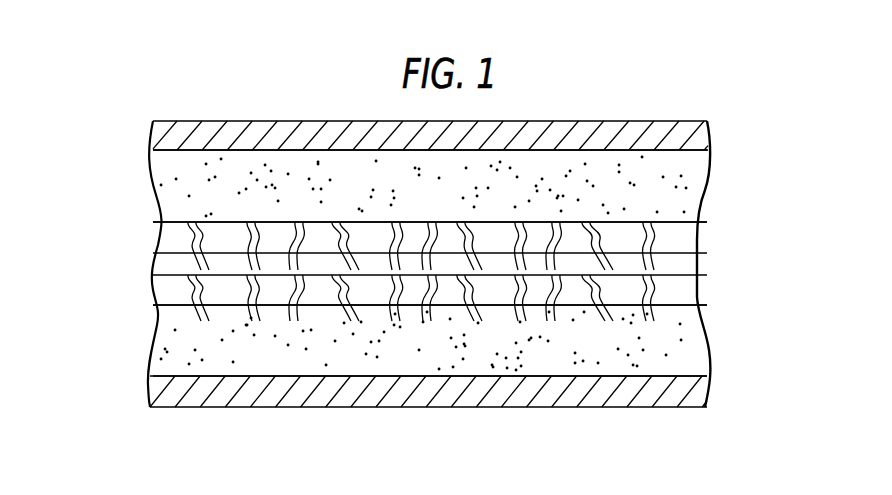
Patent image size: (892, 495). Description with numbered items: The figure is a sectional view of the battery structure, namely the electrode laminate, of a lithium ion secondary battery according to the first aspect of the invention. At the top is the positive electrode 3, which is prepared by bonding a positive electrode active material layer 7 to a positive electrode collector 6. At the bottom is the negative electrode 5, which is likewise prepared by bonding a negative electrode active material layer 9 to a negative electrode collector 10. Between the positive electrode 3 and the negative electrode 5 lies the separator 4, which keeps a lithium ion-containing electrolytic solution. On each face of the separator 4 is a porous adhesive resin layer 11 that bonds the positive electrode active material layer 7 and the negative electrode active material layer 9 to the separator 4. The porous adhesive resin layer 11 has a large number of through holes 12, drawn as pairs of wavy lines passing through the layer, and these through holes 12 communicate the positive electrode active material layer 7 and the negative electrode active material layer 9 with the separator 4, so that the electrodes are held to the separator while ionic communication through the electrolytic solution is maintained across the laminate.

The positive electrode 3 is at (485, 171).
The separator 4 is at (688, 268).
The negative electrode 5 is at (483, 356).
The positive electrode collector 6 is at (687, 135).
The positive electrode active material layer 7 is at (683, 192).
The negative electrode active material layer 9 is at (683, 340).
The negative electrode collector 10 is at (687, 387).
The porous adhesive resin layer 11 is at (156, 283).
The through holes 12 is at (652, 241).